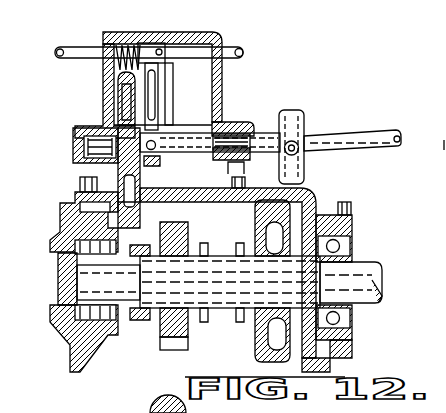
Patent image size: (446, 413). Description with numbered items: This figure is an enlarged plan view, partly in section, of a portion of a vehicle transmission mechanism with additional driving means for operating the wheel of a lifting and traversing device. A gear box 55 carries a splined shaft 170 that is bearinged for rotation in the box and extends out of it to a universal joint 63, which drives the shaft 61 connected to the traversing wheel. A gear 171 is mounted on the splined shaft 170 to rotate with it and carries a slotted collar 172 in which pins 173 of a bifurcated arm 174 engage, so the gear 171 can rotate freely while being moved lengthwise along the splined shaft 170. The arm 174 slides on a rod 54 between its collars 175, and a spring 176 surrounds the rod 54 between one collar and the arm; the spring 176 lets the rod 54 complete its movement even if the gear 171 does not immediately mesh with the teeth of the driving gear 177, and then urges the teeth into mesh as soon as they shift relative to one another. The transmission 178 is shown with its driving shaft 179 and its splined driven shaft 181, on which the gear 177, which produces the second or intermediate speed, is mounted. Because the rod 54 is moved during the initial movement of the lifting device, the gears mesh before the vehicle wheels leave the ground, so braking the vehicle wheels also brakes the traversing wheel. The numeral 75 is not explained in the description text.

The gear box 55 is at (215, 33).
The rod 54 is at (71, 58).
The spring 176 is at (140, 43).
The collars 175 is at (115, 45).
The bifurcated arm 174 is at (158, 110).
The pins 173 is at (205, 135).
The splined shaft 170 is at (214, 130).
The slotted collar 172 is at (162, 165).
The gear 171 is at (140, 194).
The universal joint 63 is at (300, 122).
The shaft 61 is at (369, 140).
The member 75 is at (436, 153).
The transmission 178 is at (312, 206).
The driving gear 177 is at (198, 238).
The driving shaft 179 is at (62, 268).
The driven shaft 181 is at (369, 262).